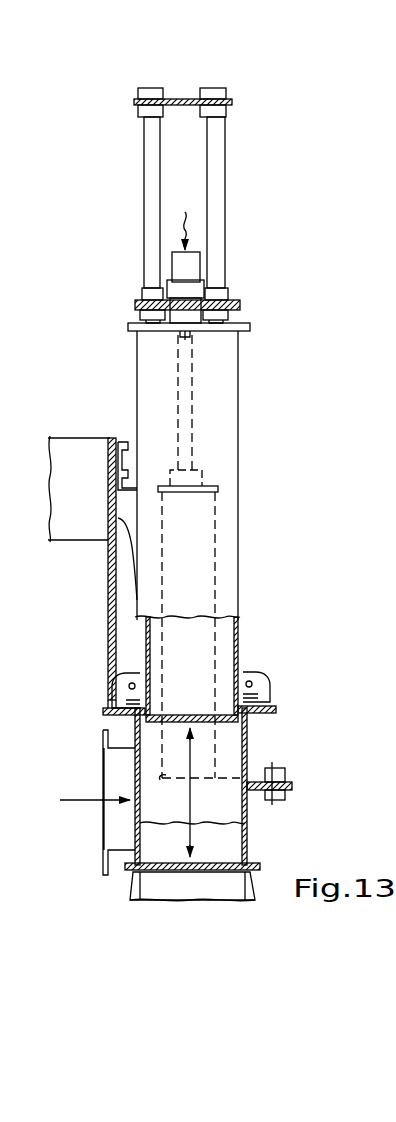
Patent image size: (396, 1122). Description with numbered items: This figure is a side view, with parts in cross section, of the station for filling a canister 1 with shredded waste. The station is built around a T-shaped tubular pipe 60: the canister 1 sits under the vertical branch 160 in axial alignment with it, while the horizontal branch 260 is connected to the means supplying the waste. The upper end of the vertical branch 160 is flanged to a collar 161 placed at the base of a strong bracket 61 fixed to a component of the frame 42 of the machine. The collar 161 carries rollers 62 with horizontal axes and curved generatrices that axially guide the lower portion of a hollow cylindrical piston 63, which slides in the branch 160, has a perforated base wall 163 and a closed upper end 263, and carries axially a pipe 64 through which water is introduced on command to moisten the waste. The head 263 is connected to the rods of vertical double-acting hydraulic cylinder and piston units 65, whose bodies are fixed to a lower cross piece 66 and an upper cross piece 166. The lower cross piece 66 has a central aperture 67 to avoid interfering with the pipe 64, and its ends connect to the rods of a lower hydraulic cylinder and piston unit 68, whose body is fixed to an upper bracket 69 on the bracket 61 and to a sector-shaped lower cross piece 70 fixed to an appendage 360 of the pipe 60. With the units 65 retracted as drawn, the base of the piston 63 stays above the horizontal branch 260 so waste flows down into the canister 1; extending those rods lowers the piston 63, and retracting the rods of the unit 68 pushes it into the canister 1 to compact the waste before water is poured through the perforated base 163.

The canister 1 is at (130, 885).
The frame 42 is at (68, 432).
The T-shaped tubular pipe 60 is at (250, 747).
The bracket 61 is at (106, 580).
The rollers 62 is at (137, 675).
The hollow cylindrical piston 63 is at (240, 433).
The pipe 64 is at (190, 266).
The vertical double-acting hydraulic cylinder and piston units 65 is at (228, 177).
The lower cross piece 66 is at (135, 303).
The central aperture 67 is at (222, 300).
The vertical double-acting hydraulic cylinder and piston unit 68 is at (213, 553).
The upper bracket 69 is at (148, 486).
The lower cross piece 70 is at (283, 780).
The vertical branch 160 is at (260, 833).
The collar 161 is at (277, 708).
The perforated base wall 163 is at (172, 720).
The upper cross piece 166 is at (135, 102).
The horizontal branch 260 is at (112, 770).
The closed upper end 263 is at (252, 326).
The appendage 360 is at (286, 788).